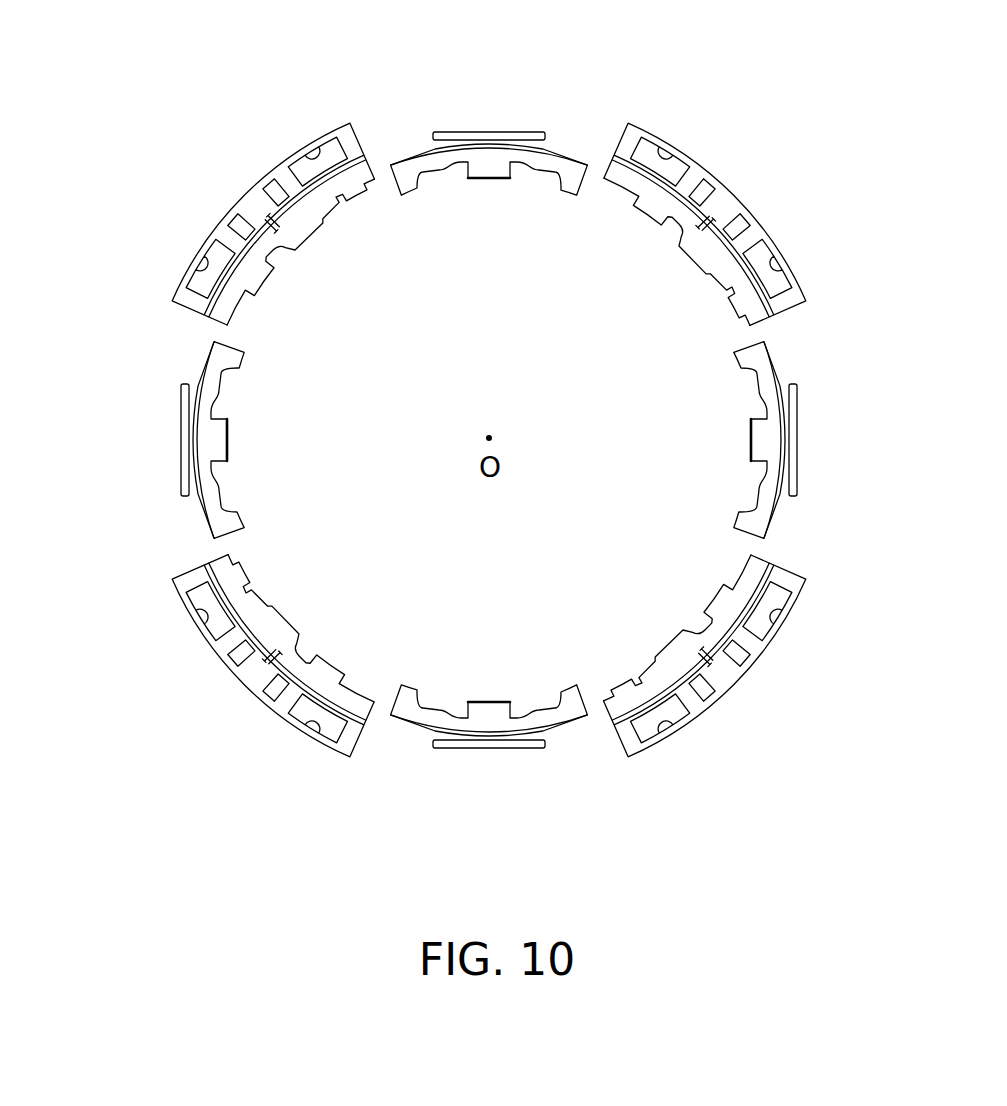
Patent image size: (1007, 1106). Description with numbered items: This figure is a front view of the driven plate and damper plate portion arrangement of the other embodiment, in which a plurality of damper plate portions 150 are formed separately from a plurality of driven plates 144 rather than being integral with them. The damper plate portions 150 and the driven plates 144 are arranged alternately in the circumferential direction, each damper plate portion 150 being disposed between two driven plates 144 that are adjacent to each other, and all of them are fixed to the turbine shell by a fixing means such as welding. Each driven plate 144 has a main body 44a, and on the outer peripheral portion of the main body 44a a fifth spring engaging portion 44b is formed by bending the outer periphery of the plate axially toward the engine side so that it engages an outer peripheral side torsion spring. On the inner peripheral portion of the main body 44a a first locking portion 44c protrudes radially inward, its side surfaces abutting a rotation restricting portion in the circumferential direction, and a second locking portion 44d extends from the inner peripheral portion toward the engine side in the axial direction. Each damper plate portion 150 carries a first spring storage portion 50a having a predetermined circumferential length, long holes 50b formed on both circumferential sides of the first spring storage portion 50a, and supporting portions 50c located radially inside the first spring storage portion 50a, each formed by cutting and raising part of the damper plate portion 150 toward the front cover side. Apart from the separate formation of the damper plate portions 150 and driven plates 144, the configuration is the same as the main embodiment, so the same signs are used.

The driven plate 144 is at (466, 456).
The main body 44a is at (577, 212).
The fifth spring engaging portion 44b is at (521, 136).
The first locking portion 44c is at (498, 178).
The second locking portion 44d is at (352, 202).
The damper plate portion 150 is at (497, 437).
The first spring storage portion 50a is at (272, 183).
The long hole 50b is at (296, 160).
The supporting portion 50c is at (266, 222).